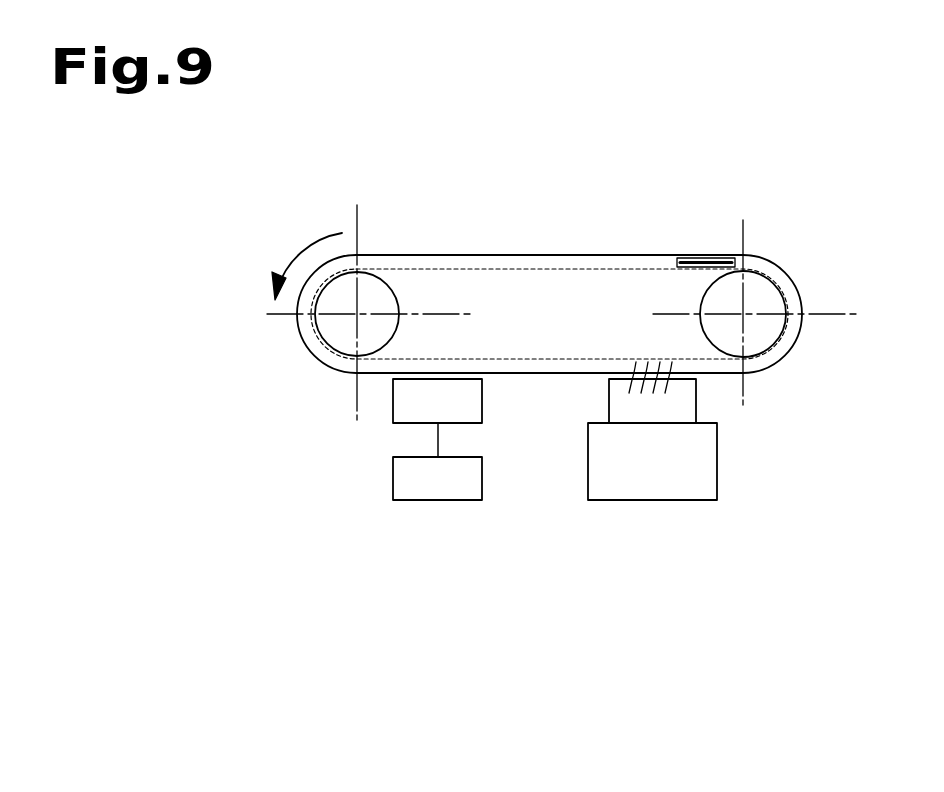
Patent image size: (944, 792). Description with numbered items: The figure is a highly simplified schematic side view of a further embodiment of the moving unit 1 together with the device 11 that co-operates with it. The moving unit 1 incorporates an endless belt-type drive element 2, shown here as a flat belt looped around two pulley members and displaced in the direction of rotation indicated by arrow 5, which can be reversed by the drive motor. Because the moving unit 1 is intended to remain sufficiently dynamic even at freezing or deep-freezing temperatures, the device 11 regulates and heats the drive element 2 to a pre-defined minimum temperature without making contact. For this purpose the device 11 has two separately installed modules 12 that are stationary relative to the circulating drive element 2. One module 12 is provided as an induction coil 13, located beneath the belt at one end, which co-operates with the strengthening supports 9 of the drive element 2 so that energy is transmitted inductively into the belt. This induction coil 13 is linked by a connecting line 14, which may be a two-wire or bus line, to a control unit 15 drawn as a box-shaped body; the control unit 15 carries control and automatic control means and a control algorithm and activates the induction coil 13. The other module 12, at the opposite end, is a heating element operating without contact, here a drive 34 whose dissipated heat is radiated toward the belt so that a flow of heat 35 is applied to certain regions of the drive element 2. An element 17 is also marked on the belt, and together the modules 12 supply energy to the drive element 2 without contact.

The moving unit 1 is at (677, 230).
The drive element 2 is at (519, 250).
The arrow 5 is at (310, 249).
The strengthening supports 9 is at (312, 330).
The device 11 is at (539, 511).
The module 12 is at (383, 404).
The induction coil 13 is at (412, 413).
The connecting line 14 is at (438, 450).
The control unit 15 is at (387, 500).
The marker element 17 is at (715, 243).
The drive 34 is at (700, 473).
The flow of heat 35 is at (633, 383).